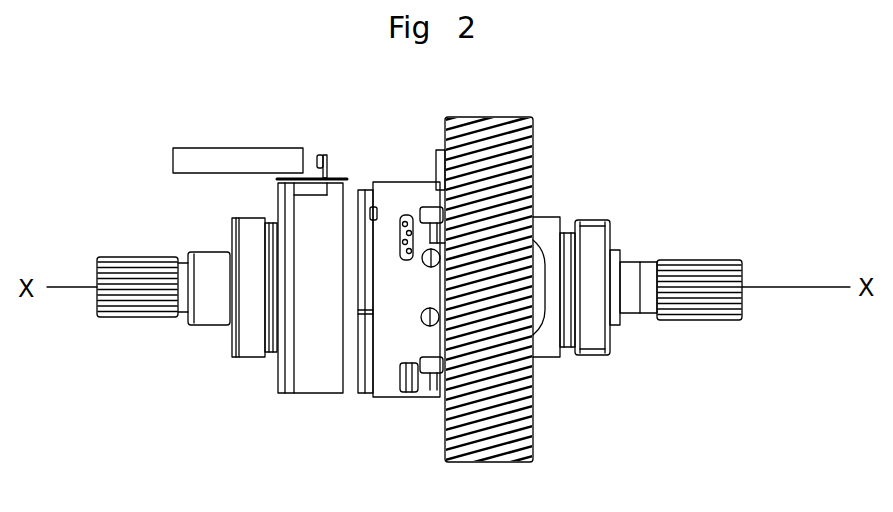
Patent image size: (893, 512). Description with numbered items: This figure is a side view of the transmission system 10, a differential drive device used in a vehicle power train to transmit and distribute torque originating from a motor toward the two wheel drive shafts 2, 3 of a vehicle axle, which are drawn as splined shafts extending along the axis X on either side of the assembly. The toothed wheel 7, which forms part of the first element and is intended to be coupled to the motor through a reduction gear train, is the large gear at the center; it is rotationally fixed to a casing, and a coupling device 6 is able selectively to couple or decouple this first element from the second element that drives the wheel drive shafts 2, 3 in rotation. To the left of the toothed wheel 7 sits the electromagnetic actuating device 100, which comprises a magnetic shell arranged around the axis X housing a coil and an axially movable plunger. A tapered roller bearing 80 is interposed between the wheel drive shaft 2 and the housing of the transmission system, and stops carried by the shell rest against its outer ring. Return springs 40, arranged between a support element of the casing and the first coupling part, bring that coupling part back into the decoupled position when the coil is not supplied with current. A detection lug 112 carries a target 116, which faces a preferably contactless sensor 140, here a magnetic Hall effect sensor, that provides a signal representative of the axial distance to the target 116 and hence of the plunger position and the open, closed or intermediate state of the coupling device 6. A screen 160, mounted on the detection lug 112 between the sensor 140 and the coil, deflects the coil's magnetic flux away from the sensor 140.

The wheel drive shaft 2 is at (133, 300).
The wheel drive shaft 3 is at (683, 280).
The coupling device 6 is at (412, 213).
The toothed wheel 7 is at (520, 422).
The transmission system 10 is at (562, 290).
The return springs 40 is at (375, 217).
The tapered roller bearing 80 is at (247, 328).
The electromagnetic actuating device 100 is at (318, 373).
The detection lug 112 is at (330, 158).
The target 116 is at (318, 157).
The sensor 140 is at (292, 163).
The screen 160 is at (337, 176).